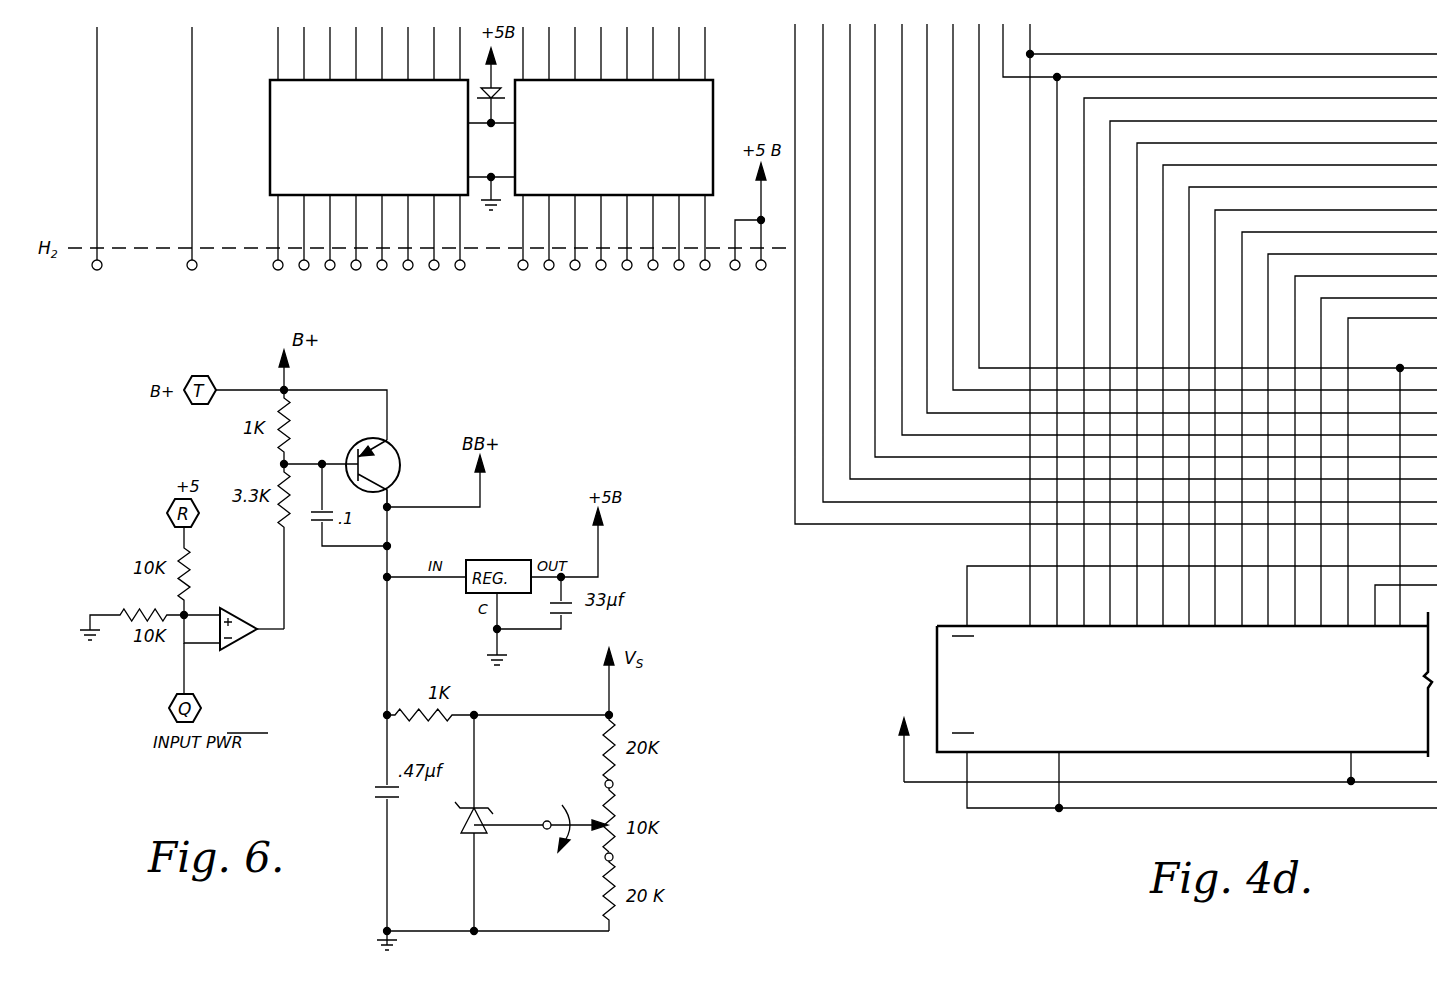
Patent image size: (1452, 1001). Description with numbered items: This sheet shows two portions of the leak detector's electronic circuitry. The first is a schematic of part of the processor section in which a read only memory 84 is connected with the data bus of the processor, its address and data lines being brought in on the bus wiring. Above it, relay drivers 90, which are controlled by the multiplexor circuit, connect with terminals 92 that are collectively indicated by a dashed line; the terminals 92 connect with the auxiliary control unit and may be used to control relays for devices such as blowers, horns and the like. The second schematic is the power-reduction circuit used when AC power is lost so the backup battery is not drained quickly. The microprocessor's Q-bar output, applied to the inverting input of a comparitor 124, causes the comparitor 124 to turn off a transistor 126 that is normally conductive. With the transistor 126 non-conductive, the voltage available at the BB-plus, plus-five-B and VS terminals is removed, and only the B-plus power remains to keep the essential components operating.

In FIG. 4D, the read only memory 84 is at (935, 656).
In FIG. 4D, the relay drivers 90 is at (283, 133).
In FIG. 4D, the terminals 92 is at (252, 252).
In FIG. 6, the comparitor 124 is at (240, 612).
In FIG. 6, the transistor 126 is at (393, 455).